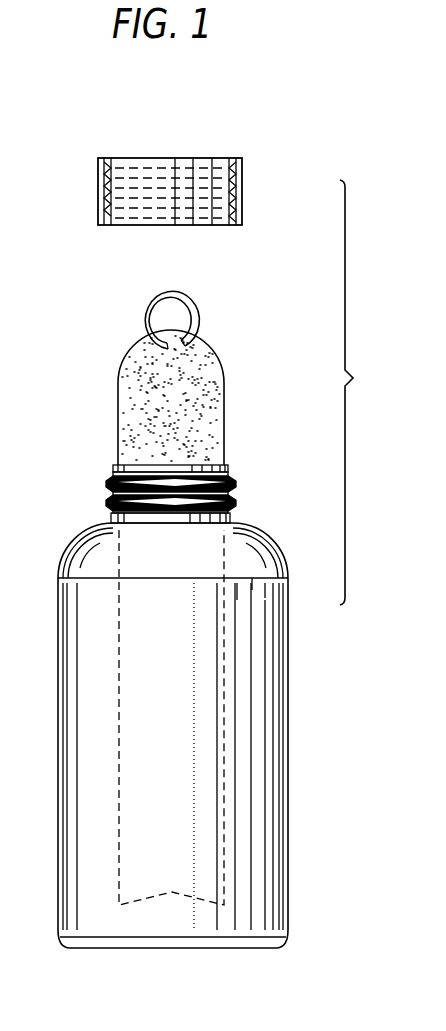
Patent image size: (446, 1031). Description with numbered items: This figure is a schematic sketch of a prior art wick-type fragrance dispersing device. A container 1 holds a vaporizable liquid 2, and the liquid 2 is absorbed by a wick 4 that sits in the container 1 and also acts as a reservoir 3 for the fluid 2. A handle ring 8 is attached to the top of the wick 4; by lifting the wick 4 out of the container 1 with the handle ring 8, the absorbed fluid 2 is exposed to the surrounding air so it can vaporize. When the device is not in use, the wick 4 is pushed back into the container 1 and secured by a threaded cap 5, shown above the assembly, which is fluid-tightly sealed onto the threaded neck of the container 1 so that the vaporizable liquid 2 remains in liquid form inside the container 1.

The container 1 is at (288, 815).
The vaporizable liquid 2 is at (263, 702).
The reservoir 3 is at (267, 546).
The wick 4 is at (213, 378).
The threaded cap 5 is at (218, 158).
The handle ring 8 is at (198, 313).